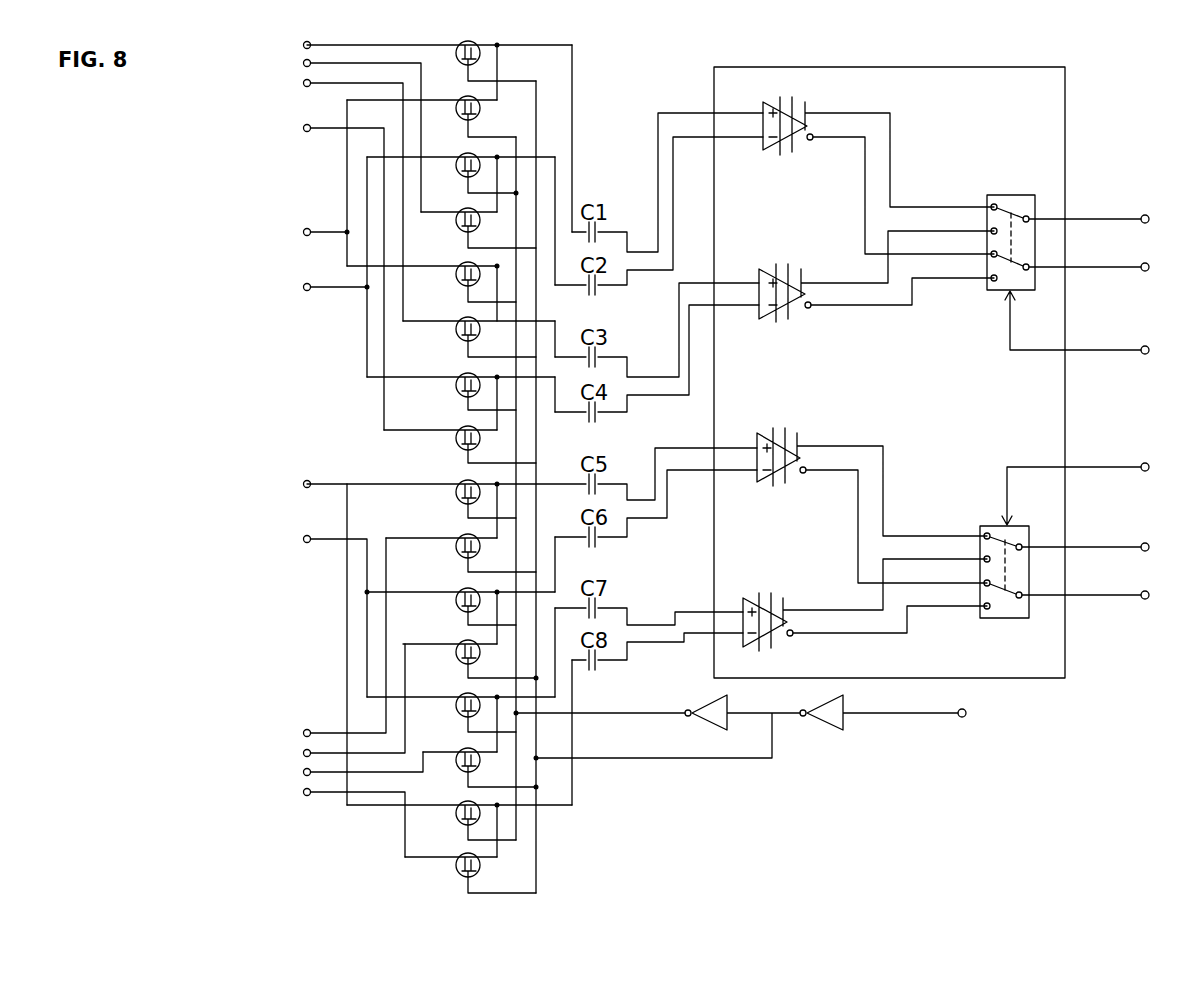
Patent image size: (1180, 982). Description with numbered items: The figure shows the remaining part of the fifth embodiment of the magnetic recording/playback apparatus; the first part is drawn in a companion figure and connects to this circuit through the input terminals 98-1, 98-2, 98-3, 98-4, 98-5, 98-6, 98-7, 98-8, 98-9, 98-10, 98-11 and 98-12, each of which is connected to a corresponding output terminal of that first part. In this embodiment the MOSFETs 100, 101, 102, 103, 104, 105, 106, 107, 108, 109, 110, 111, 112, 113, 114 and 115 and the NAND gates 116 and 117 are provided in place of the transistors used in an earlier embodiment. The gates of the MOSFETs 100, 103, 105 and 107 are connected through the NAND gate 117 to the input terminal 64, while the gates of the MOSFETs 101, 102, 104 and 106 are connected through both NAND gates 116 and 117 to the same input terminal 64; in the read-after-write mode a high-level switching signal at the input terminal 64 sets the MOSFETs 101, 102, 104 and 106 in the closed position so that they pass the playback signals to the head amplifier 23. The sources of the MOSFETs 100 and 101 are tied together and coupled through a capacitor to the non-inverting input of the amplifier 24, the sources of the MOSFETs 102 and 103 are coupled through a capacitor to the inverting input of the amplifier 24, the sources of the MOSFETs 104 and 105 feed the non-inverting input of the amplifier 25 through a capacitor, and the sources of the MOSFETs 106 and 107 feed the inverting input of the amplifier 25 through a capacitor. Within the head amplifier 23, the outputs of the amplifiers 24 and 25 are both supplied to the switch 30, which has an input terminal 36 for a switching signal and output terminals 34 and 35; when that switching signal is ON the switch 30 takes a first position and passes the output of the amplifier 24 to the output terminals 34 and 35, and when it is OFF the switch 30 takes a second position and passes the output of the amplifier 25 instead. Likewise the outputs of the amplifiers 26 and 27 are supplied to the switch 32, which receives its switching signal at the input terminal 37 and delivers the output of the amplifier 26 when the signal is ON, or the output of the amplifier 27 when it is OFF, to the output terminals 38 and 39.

The head amplifier 23 is at (1068, 67).
The amplifier 24 is at (770, 150).
The amplifier 25 is at (768, 319).
The amplifier 26 is at (765, 482).
The amplifier 27 is at (752, 596).
The switch 30 is at (1037, 197).
The switch 32 is at (1032, 622).
The output terminal 34 is at (1144, 224).
The output terminal 35 is at (1144, 272).
The input terminal 36 is at (1143, 355).
The input terminal 37 is at (1143, 472).
The output terminal 38 is at (1143, 552).
The output terminal 39 is at (1143, 600).
The input terminal 64 is at (963, 718).
The input terminal 98-1 is at (277, 46).
The input terminal 98-2 is at (332, 132).
The input terminal 98-3 is at (323, 196).
The input terminal 98-4 is at (313, 273).
The input terminal 98-5 is at (295, 183).
The input terminal 98-6 is at (305, 267).
The input terminal 98-7 is at (295, 639).
The input terminal 98-8 is at (305, 612).
The input terminal 98-9 is at (314, 642).
The input terminal 98-10 is at (324, 705).
The input terminal 98-11 is at (333, 768).
The input terminal 98-12 is at (324, 819).
The MOSFET 100 is at (456, 61).
The MOSFET 101 is at (456, 116).
The MOSFET 102 is at (456, 173).
The MOSFET 103 is at (456, 228).
The MOSFET 104 is at (456, 282).
The MOSFET 105 is at (456, 337).
The MOSFET 106 is at (456, 393).
The MOSFET 107 is at (456, 446).
The MOSFET 108 is at (456, 500).
The MOSFET 109 is at (456, 554).
The MOSFET 110 is at (456, 608).
The MOSFET 111 is at (456, 660).
The MOSFET 112 is at (456, 713).
The MOSFET 113 is at (456, 768).
The MOSFET 114 is at (456, 821).
The MOSFET 115 is at (456, 873).
The NAND gate 116 is at (695, 727).
The NAND gate 117 is at (845, 720).